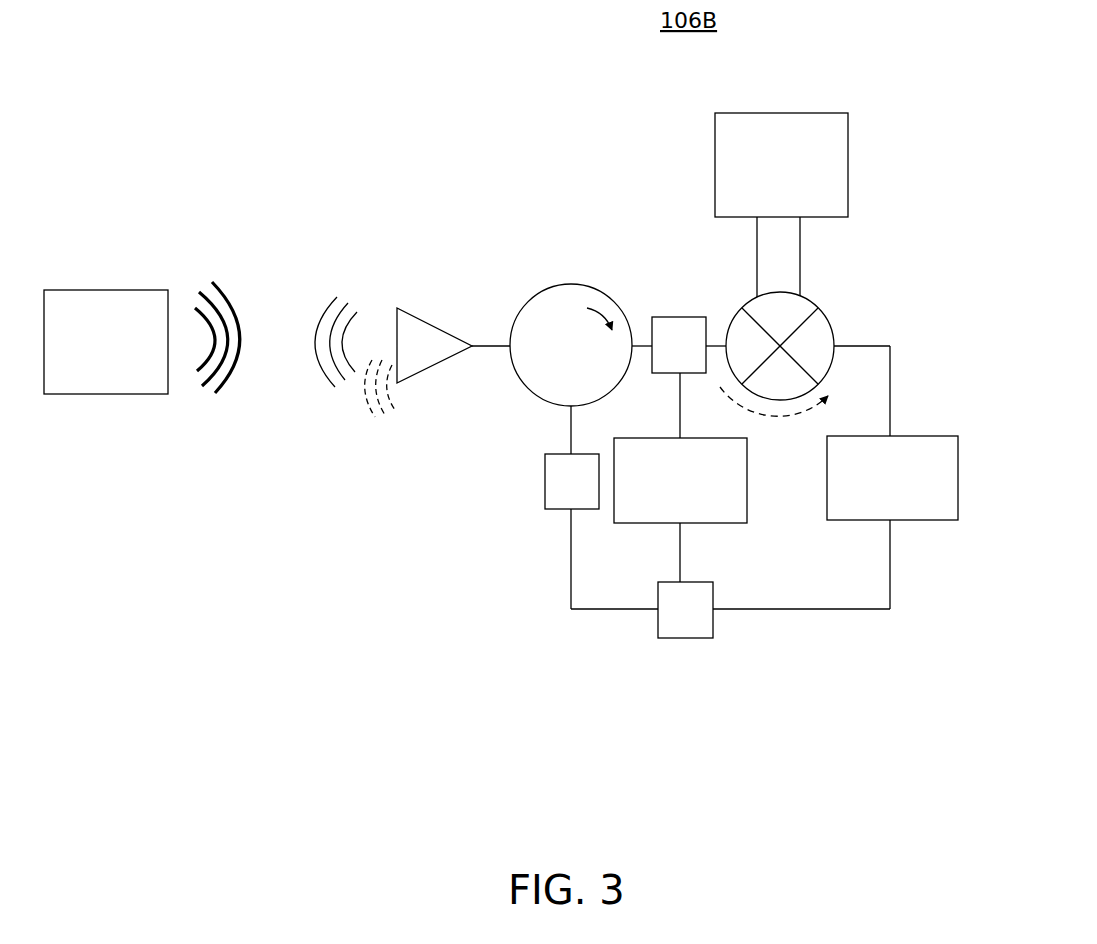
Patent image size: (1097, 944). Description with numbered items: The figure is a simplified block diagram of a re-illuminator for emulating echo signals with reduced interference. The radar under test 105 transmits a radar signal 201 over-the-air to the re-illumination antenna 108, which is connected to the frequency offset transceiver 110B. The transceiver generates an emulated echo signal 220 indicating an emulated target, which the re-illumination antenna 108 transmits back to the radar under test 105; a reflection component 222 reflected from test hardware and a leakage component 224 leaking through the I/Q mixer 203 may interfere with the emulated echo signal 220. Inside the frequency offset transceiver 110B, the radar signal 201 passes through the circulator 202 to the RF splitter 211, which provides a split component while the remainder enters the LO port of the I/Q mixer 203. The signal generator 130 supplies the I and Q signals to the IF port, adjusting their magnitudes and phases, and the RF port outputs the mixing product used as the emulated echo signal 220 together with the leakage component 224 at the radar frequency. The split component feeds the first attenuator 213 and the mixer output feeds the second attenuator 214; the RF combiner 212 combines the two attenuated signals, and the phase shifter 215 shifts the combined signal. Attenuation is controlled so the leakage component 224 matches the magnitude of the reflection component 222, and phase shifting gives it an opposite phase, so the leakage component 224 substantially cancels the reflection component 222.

The frequency offset transceiver 110B is at (557, 126).
The radar under test 105 is at (124, 307).
The radar signal 201 is at (260, 302).
The emulated echo signal 220 is at (296, 375).
The reflection component 222 is at (339, 432).
The re-illumination antenna 108 is at (453, 319).
The circulator 202 is at (593, 342).
The RF splitter 211 is at (664, 378).
The signal generator 130 is at (825, 181).
The I/Q mixer 203 is at (819, 343).
The leakage component 224 is at (774, 446).
The phase shifter 215 is at (574, 531).
The first attenuator 213 is at (666, 514).
The RF combiner 212 is at (746, 645).
The second attenuator 214 is at (881, 522).